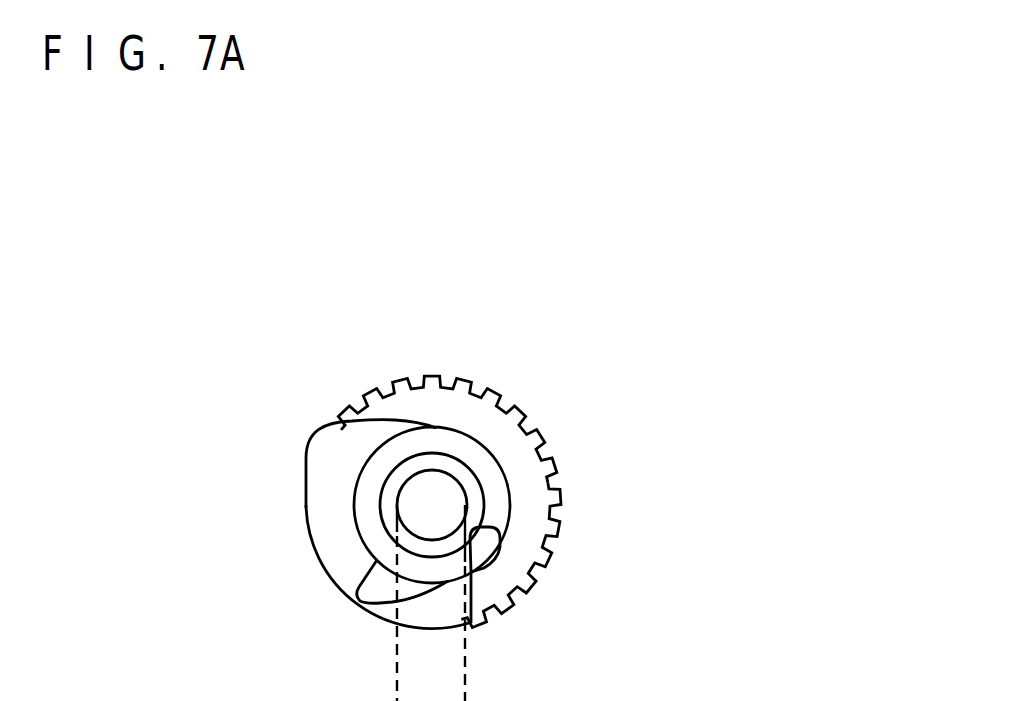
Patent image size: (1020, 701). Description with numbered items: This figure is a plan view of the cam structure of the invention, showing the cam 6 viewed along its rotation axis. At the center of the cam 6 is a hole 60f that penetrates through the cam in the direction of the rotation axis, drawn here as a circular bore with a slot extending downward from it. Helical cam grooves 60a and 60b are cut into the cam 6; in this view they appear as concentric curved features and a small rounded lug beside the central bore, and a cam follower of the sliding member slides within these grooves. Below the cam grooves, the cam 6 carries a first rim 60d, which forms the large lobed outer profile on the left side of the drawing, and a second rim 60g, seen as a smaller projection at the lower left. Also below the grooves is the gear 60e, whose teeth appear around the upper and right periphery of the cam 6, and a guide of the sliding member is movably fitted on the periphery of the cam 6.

The cam 6 is at (728, 293).
The cam groove 60a is at (372, 493).
The cam groove 60b is at (488, 544).
The first rim 60d is at (308, 548).
The gear 60e is at (527, 583).
The hole 60f is at (443, 487).
The second rim 60g is at (364, 607).